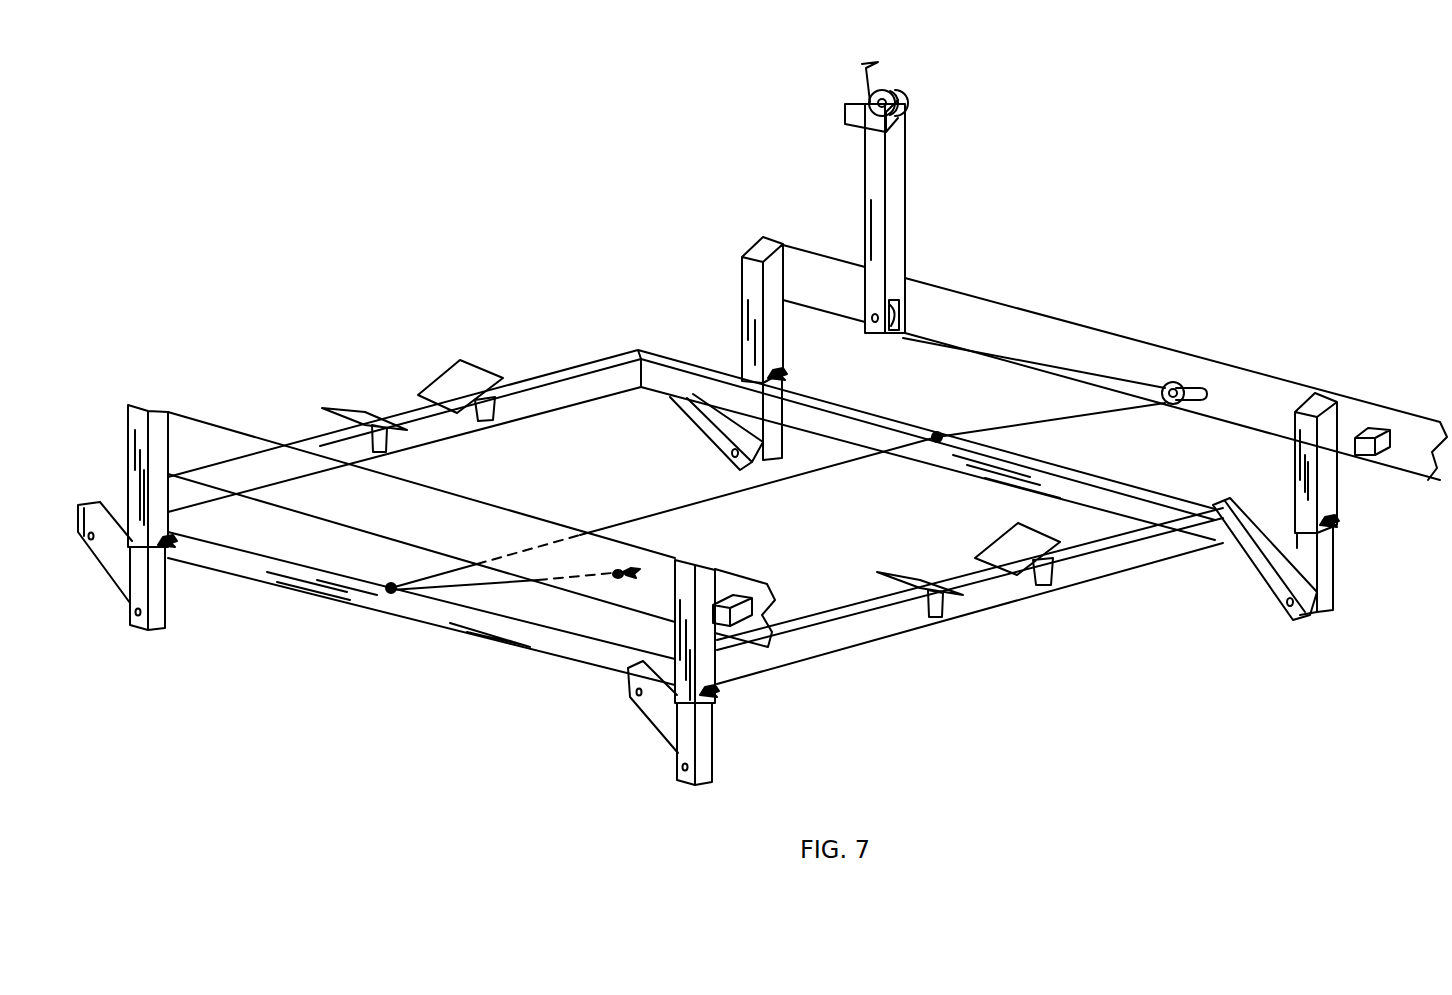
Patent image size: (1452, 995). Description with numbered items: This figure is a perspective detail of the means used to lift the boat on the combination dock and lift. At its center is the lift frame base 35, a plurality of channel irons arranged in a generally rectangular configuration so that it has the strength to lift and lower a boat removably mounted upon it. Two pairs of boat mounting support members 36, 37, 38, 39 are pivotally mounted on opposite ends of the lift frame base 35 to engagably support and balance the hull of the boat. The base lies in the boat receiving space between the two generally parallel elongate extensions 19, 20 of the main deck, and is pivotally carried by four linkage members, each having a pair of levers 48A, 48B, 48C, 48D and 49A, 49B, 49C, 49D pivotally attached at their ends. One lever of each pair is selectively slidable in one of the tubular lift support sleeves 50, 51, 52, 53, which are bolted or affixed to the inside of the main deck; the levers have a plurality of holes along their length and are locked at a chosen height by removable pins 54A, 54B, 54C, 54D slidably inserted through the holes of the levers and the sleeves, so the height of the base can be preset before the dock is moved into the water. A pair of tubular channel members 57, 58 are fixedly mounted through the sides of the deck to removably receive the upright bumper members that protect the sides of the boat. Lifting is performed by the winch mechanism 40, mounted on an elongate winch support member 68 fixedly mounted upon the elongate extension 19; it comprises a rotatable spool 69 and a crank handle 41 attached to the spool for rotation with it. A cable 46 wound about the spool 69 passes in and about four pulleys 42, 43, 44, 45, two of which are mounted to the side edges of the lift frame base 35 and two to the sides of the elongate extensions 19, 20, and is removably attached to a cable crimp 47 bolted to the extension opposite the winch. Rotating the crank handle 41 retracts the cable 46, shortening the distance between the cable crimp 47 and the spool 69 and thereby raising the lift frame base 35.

The elongate extension 19 is at (1070, 320).
The elongate extension 20 is at (275, 498).
The lift frame base 35 is at (868, 628).
The boat mounting support member 36 is at (453, 388).
The boat mounting support member 37 is at (362, 418).
The boat mounting support member 38 is at (913, 580).
The boat mounting support member 39 is at (998, 548).
The winch mechanism 40 is at (912, 118).
The crank handle 41 is at (862, 64).
The pulley 42 is at (891, 337).
The pulley 43 is at (1186, 384).
The pulley 44 is at (937, 432).
The pulley 45 is at (391, 596).
The cable 46 is at (637, 517).
The cable crimp 47 is at (633, 579).
The lever 48A is at (783, 447).
The lever 48B is at (163, 567).
The lever 48C is at (712, 712).
The lever 48D is at (1325, 563).
The lever 49A is at (708, 425).
The lever 49B is at (120, 572).
The lever 49C is at (663, 725).
The lever 49D is at (1262, 578).
The lift support sleeve 50 is at (742, 310).
The lift support sleeve 51 is at (130, 478).
The lift support sleeve 52 is at (675, 645).
The lift support sleeve 53 is at (1332, 488).
The removable pin 54A is at (790, 372).
The removable pin 54B is at (162, 537).
The removable pin 54C is at (722, 688).
The removable pin 54D is at (1337, 519).
The tubular channel member 57 is at (745, 602).
The cleat 58 is at (1385, 430).
The winch support member 68 is at (905, 190).
The rotatable spool 69 is at (905, 95).